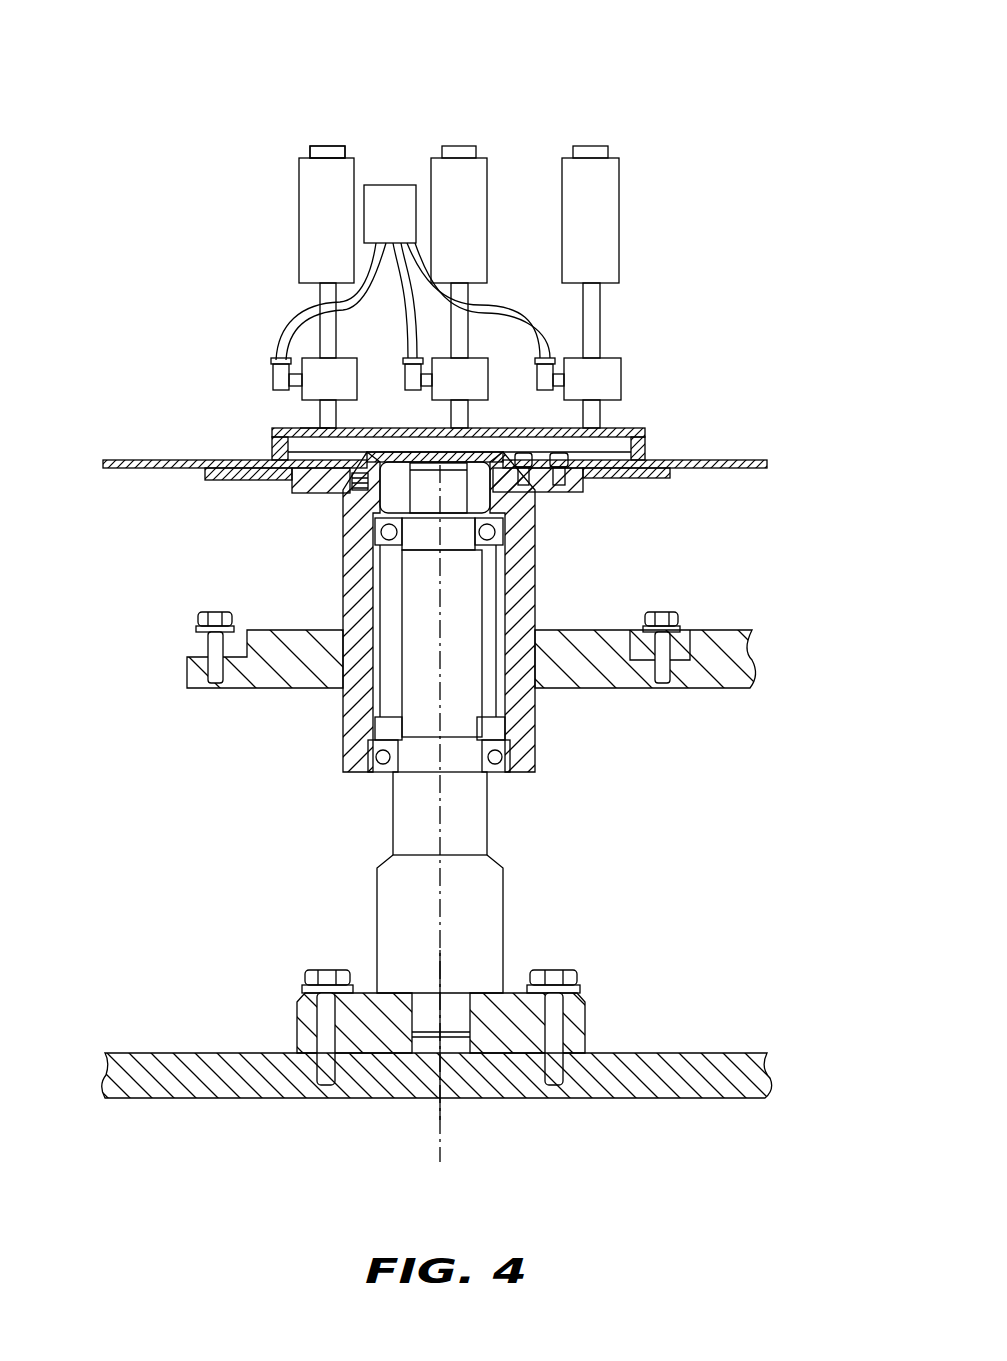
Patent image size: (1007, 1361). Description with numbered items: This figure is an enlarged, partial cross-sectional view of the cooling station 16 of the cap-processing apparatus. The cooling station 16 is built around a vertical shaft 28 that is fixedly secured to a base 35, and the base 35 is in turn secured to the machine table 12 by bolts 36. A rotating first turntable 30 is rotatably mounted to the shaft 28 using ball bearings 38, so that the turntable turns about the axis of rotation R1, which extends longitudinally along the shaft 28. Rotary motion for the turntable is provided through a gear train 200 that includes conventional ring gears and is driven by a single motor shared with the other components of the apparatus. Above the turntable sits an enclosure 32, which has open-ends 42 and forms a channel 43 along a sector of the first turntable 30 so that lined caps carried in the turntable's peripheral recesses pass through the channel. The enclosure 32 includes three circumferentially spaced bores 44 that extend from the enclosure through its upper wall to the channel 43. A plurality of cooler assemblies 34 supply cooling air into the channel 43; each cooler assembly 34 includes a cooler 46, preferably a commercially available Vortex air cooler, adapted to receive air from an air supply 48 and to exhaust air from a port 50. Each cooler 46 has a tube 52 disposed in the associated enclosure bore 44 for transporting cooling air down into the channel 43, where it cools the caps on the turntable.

The machine table 12 is at (770, 1075).
The cooling station 16 is at (713, 192).
The shaft 28 is at (487, 802).
The rotating first turntable 30 is at (750, 458).
The enclosure 32 is at (631, 428).
The cooler assemblies 34 is at (325, 145).
The base 35 is at (512, 1043).
The bolts 36 is at (326, 970).
The ball bearings 38 is at (487, 532).
The open-ends 42 is at (272, 455).
The channel 43 is at (257, 435).
The bores 44 is at (307, 418).
The cooler 46 is at (339, 395).
The air supply 48 is at (402, 228).
The port 50 is at (317, 145).
The tube 52 is at (313, 433).
The gear train 200 is at (773, 632).
The axis of rotation R1 is at (445, 950).